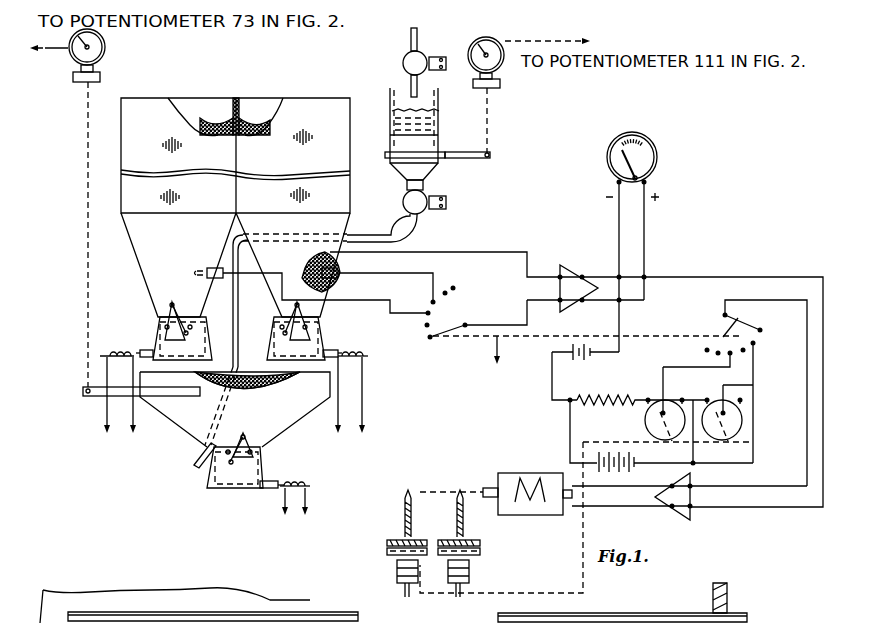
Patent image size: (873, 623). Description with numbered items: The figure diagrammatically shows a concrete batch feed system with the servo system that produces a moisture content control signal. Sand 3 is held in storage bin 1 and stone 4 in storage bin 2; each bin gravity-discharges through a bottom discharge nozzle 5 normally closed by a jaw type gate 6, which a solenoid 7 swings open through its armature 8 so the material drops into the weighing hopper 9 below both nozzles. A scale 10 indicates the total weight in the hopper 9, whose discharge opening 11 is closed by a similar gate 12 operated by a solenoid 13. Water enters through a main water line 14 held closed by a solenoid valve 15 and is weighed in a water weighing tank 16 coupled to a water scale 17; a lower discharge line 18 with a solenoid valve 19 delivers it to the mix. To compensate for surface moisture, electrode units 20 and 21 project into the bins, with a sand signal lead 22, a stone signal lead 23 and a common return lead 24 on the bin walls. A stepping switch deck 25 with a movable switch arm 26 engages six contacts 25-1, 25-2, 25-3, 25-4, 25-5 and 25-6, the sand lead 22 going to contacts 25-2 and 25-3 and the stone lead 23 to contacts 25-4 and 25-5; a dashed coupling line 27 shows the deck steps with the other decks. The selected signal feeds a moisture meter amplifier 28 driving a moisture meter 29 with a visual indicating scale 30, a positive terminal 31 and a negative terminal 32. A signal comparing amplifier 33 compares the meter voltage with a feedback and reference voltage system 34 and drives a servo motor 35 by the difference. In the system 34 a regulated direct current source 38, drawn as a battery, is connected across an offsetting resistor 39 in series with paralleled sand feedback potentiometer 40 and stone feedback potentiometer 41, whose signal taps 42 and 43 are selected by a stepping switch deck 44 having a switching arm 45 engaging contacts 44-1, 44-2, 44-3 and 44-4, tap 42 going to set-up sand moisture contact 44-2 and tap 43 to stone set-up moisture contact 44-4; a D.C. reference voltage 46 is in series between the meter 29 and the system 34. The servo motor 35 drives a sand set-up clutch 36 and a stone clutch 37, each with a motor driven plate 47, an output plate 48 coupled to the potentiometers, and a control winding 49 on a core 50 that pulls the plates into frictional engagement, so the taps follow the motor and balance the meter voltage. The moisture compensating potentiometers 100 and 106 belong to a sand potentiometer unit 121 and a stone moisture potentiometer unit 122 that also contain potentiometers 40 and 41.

The storage bin 1 is at (133, 150).
The storage bin 2 is at (338, 146).
The sand 3 is at (212, 128).
The stone 4 is at (270, 130).
The discharge nozzle 5 is at (158, 320).
The gate 6 is at (153, 337).
The solenoid 7 is at (112, 349).
The armature 8 is at (100, 354).
The weighing hopper 9 is at (190, 418).
The scale 10 is at (105, 53).
The discharge opening 11 is at (262, 453).
The gate 12 is at (219, 492).
The solenoid 13 is at (297, 481).
The main water line 14 is at (409, 42).
The solenoid valve 15 is at (403, 64).
The water weighing tank 16 is at (440, 132).
The water scale 17 is at (505, 62).
The lower discharge line 18 is at (390, 237).
The solenoid valve 19 is at (429, 194).
The electrode unit 20 is at (204, 268).
The electrode unit 21 is at (340, 264).
The sand signal lead 22 is at (242, 270).
The stone signal lead 23 is at (380, 272).
The common return lead 24 is at (433, 252).
The stepping switch deck 25 is at (445, 312).
The contact 25-1 is at (428, 340).
The contact 25-2 is at (424, 327).
The contact 25-3 is at (425, 312).
The contact 25-4 is at (432, 299).
The contact 25-5 is at (445, 293).
The contact 25-6 is at (455, 287).
The movable switch arm 26 is at (444, 332).
The dashed coupling line 27 is at (500, 338).
The moisture meter amplifier 28 is at (572, 268).
The moisture meter 29 is at (658, 162).
The visual indicating scale 30 is at (615, 162).
The positive terminal 31 is at (646, 183).
The negative terminal 32 is at (617, 182).
The signal comparing amplifier 33 is at (692, 508).
The feedback and reference voltage system 34 is at (682, 365).
The servo motor 35 is at (538, 515).
The sand set-up clutch 36 is at (382, 547).
The stone clutch 37 is at (488, 548).
The regulated direct current source 38 is at (638, 453).
The electrical offsetting resistor 39 is at (612, 398).
The sand feedback potentiometer 40 is at (742, 434).
The stone feedback potentiometer 41 is at (647, 432).
The signal tap 42 is at (742, 415).
The signal tap 43 is at (658, 414).
The stepping switch deck 44 is at (719, 328).
The contact 44-1 is at (761, 329).
The set-up sand moisture contact 44-2 is at (755, 343).
The contact 44-3 is at (745, 352).
The stone set-up moisture contact 44-4 is at (733, 357).
The switching arm 45 is at (740, 318).
The D.C. reference voltage 46 is at (570, 360).
The motor driven plate 47 is at (388, 542).
The output plate 48 is at (388, 553).
The control winding 49 is at (408, 500).
The core 50 is at (404, 516).
The moisture compensating potentiometer 100 is at (400, 580).
The moisture compensating potentiometer 106 is at (453, 582).
The sand potentiometer unit 121 is at (404, 587).
The stone moisture potentiometer unit 122 is at (465, 588).